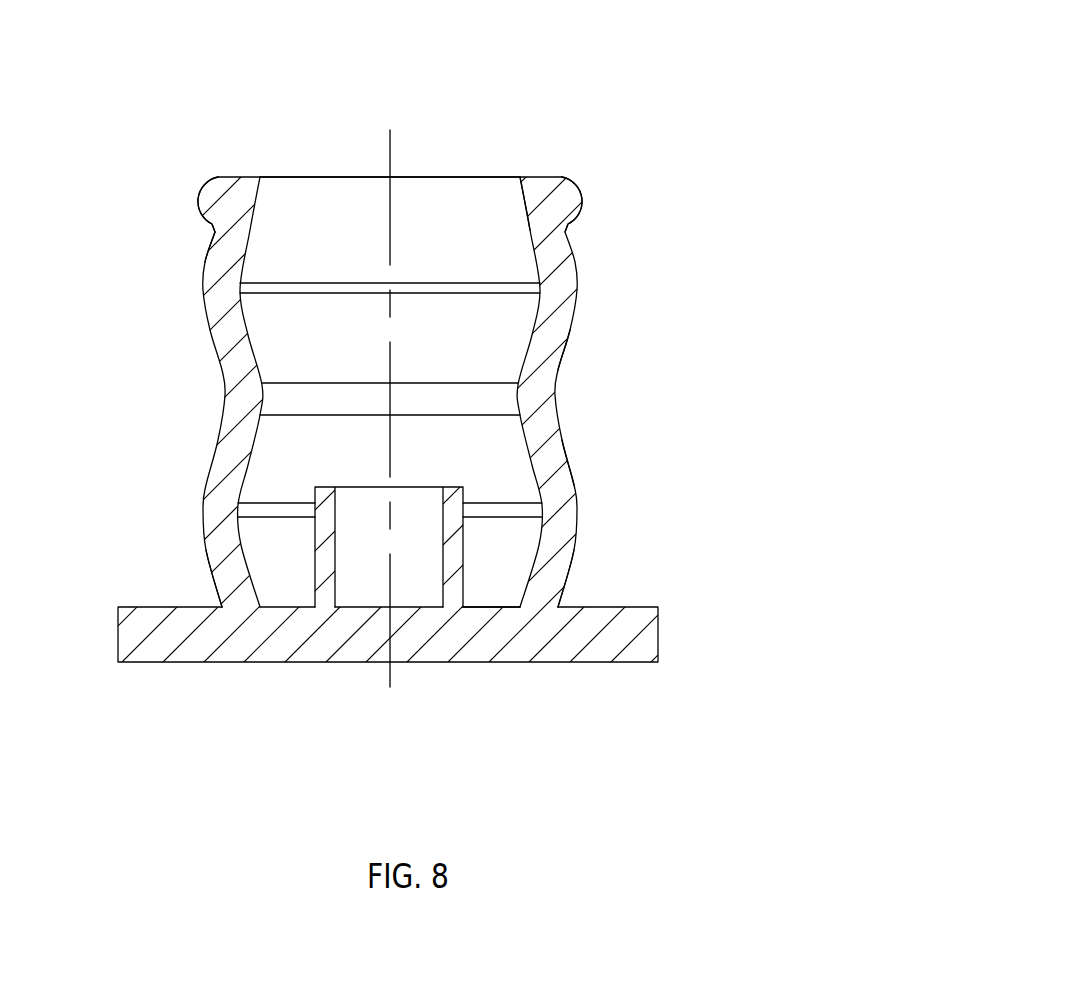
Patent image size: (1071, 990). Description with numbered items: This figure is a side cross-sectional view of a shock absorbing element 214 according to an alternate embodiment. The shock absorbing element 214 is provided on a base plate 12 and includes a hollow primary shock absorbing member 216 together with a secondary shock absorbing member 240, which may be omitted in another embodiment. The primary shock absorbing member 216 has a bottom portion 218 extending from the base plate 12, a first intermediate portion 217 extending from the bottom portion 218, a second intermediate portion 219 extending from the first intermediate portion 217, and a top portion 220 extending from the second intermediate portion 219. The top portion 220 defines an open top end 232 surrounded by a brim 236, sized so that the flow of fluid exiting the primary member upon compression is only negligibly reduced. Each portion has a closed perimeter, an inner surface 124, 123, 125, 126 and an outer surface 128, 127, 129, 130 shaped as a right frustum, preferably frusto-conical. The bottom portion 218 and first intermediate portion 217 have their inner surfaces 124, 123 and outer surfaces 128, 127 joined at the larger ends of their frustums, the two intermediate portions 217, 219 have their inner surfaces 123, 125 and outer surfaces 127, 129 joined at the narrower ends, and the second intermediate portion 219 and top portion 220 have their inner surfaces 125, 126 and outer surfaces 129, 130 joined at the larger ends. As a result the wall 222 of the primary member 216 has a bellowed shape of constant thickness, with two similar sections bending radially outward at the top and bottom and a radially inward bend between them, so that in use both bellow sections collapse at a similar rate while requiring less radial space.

The base plate 12 is at (625, 628).
The inner surface of first intermediate portion 123 is at (217, 482).
The inner surface of bottom portion 124 is at (527, 563).
The inner surface of second intermediate portion 125 is at (223, 365).
The inner surface of top portion 126 is at (263, 237).
The outer surface of first intermediate portion 127 is at (217, 482).
The outer surface of bottom portion 128 is at (213, 560).
The outer surface of second intermediate portion 129 is at (223, 365).
The outer surface of top portion 130 is at (203, 270).
The shock absorbing element 214 is at (610, 108).
The primary shock absorbing member 216 is at (200, 247).
The first intermediate portion 217 is at (553, 431).
The bottom portion 218 is at (563, 546).
The second intermediate portion 219 is at (558, 352).
The top portion 220 is at (568, 263).
The wall 222 is at (547, 230).
The open top end 232 is at (452, 185).
The brim 236 is at (572, 200).
The secondary shock absorbing member 240 is at (455, 508).